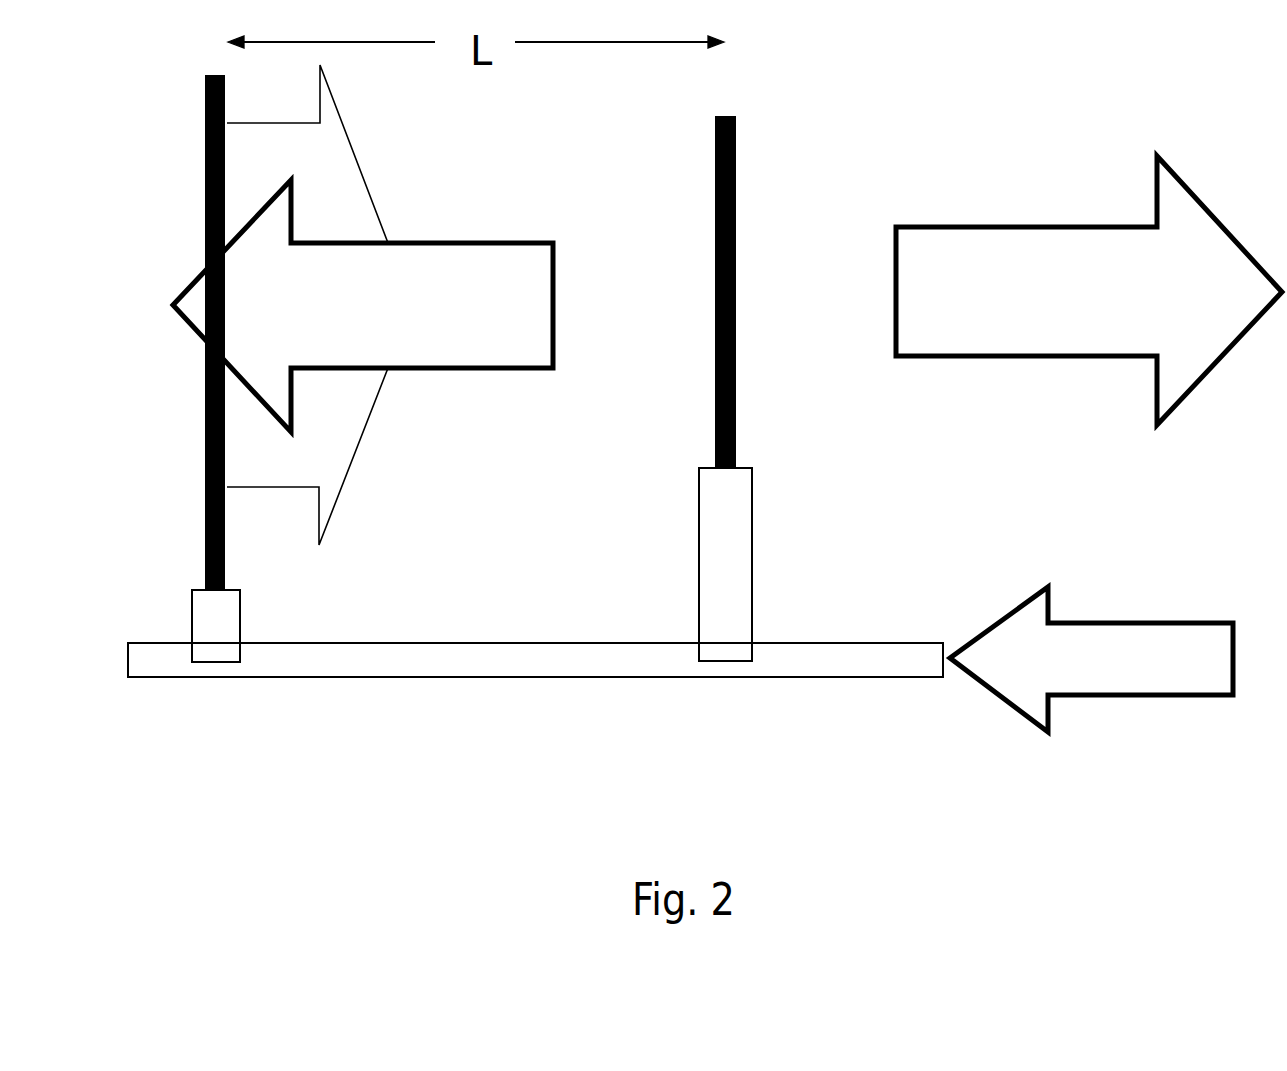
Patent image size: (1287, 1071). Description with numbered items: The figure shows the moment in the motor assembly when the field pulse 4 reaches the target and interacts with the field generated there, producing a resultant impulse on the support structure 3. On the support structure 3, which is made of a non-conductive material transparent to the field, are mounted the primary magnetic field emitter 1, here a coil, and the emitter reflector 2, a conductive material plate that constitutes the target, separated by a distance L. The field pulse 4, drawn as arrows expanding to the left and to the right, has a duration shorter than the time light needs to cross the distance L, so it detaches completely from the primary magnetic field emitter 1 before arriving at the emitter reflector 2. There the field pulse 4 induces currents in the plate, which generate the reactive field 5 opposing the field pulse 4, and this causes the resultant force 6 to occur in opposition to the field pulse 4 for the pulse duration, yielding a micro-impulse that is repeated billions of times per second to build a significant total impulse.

The primary magnetic field emitter 1 is at (744, 183).
The emitter reflector 2 is at (216, 339).
The support structure 3 is at (535, 693).
The field pulse 4 is at (727, 294).
The reactive field 5 is at (312, 305).
The resultant force 6 is at (1091, 654).